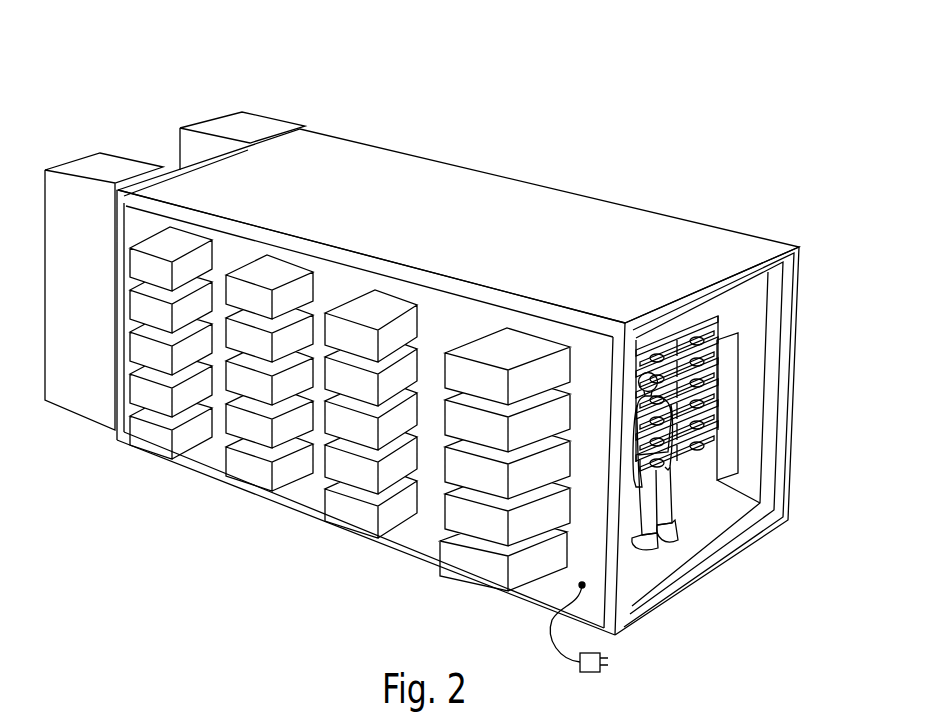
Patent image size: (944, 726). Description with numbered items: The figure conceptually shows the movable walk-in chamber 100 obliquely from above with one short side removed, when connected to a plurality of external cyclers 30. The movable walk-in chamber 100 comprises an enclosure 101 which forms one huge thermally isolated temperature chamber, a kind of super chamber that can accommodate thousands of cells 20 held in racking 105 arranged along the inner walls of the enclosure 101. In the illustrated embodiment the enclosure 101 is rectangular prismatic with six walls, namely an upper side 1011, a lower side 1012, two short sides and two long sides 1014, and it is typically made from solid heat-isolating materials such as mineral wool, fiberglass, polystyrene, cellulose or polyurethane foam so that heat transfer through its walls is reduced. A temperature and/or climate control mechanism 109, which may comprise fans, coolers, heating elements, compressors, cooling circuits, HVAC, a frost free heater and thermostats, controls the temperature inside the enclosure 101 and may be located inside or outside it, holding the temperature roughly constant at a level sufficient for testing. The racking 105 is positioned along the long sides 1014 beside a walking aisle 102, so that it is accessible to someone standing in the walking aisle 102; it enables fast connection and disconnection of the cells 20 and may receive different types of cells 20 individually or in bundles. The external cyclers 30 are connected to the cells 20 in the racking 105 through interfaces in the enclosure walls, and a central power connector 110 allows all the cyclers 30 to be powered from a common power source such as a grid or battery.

The movable walk-in chamber 100 is at (677, 145).
The enclosure 101 is at (415, 188).
The upper side 1011 is at (523, 223).
The lower side 1012 is at (212, 477).
The long sides 1014 is at (432, 518).
The temperature and/or climate control mechanism 109 is at (240, 125).
The cyclers 30 is at (152, 433).
The cells 20 is at (712, 362).
The racking 105 is at (733, 392).
The walking aisle 102 is at (680, 512).
The central power connector 110 is at (613, 667).